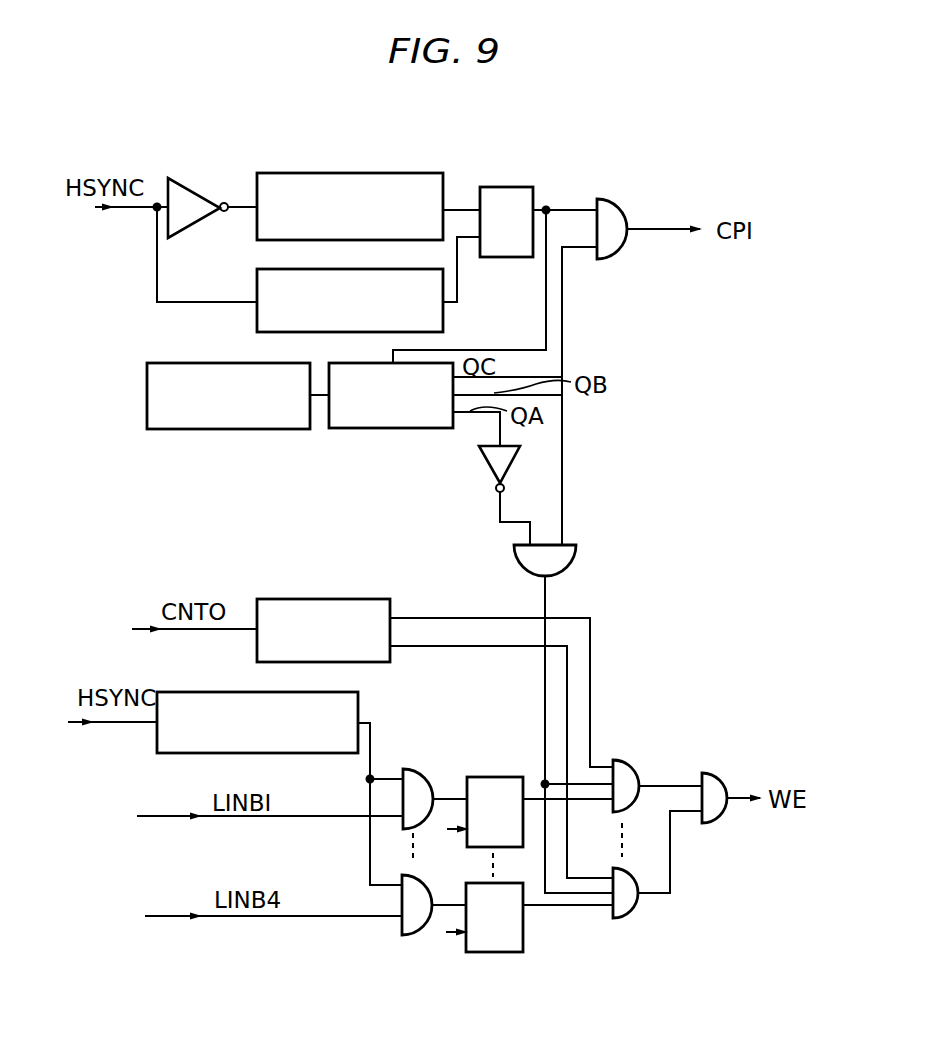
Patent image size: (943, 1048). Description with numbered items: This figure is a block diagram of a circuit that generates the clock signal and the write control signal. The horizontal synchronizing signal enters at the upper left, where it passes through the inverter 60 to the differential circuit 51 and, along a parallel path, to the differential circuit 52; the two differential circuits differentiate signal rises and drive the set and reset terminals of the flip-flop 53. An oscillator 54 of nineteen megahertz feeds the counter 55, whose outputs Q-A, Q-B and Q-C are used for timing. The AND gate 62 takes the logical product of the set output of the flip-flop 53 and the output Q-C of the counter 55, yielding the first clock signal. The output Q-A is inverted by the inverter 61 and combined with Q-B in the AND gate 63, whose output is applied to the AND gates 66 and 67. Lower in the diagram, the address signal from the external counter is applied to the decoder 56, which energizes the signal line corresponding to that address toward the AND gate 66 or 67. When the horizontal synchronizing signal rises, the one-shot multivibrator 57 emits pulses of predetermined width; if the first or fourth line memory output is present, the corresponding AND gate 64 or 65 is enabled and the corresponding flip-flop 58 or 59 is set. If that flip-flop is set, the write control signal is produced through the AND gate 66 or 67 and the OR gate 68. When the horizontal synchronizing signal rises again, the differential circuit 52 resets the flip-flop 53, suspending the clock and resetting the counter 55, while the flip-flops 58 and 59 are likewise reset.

The differential circuit 51 is at (392, 172).
The differential circuit 52 is at (444, 313).
The flip-flop 53 is at (508, 186).
The oscillator 54 is at (172, 362).
The counter 55 is at (377, 362).
The decoder 56 is at (323, 598).
The one-shot multivibrator 57 is at (359, 698).
The flip-flop 58 is at (503, 776).
The flip-flop 59 is at (498, 882).
The inverter 60 is at (203, 200).
The inverter 61 is at (510, 464).
The AND gate 62 is at (618, 213).
The AND gate 63 is at (565, 543).
The AND gate 64 is at (430, 750).
The AND gate 65 is at (418, 880).
The AND gate 66 is at (628, 762).
The AND gate 67 is at (625, 873).
The OR gate 68 is at (715, 776).